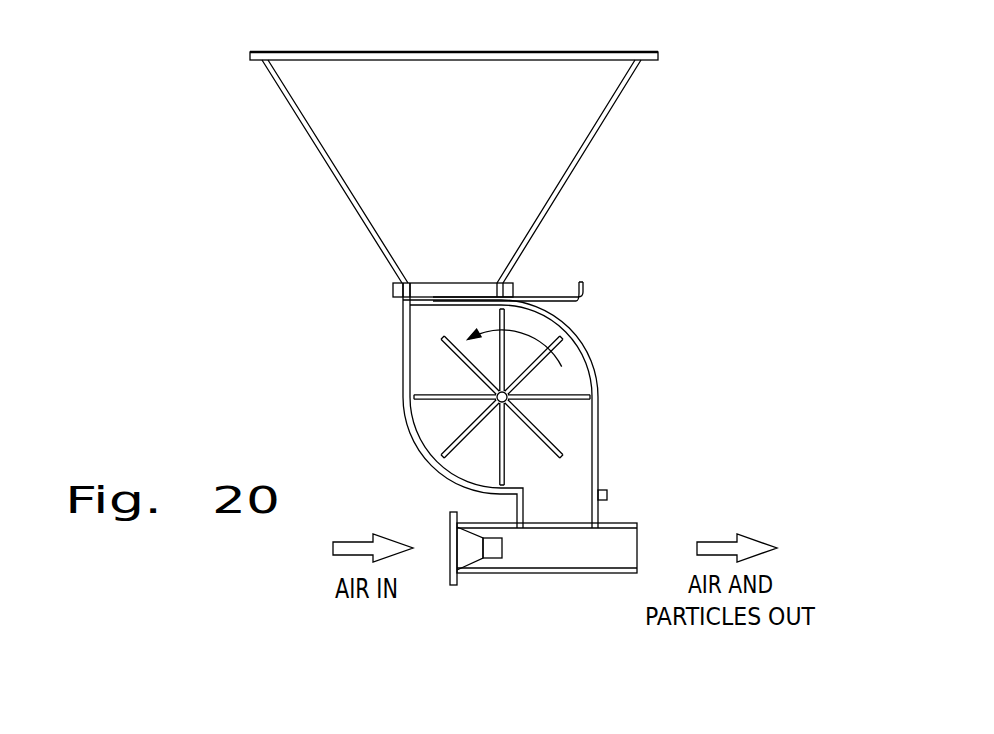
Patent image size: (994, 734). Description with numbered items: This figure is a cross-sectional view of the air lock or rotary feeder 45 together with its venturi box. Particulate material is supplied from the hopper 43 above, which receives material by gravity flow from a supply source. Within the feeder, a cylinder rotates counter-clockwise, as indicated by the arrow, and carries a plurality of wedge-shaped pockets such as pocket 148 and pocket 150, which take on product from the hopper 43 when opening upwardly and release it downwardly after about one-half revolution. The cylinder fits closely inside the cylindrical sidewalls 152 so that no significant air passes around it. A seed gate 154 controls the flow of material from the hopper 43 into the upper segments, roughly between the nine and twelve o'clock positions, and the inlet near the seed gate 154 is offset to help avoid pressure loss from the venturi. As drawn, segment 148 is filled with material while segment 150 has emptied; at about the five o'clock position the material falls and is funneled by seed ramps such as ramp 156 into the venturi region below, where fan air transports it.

The hopper 43 is at (588, 143).
The rotary feeder or air lock mechanism 45 is at (392, 368).
The wedge-shaped pocket 148 is at (460, 386).
The wedge-shaped pocket 150 is at (583, 425).
The cylindrical sidewalls 152 is at (577, 362).
The seed gate 154 is at (563, 302).
The seed ramp 156 is at (557, 512).